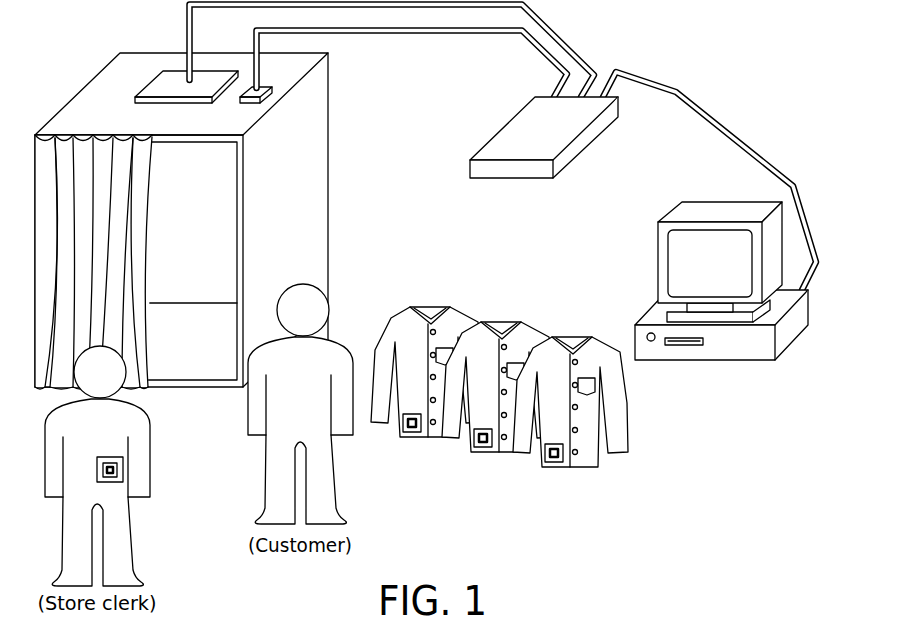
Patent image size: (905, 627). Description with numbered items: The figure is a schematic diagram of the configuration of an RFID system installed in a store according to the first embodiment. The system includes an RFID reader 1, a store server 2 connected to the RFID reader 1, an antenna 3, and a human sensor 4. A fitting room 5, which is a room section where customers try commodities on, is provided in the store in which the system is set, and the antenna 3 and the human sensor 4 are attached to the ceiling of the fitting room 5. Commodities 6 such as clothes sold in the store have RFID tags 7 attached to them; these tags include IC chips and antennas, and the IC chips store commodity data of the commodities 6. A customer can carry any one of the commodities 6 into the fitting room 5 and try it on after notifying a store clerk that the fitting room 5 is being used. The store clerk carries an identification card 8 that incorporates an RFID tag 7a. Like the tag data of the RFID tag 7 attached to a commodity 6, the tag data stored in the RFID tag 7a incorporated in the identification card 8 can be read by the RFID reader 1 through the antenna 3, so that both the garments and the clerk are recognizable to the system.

The RFID reader 1 is at (515, 179).
The store server 2 is at (690, 200).
The antenna 3 is at (167, 77).
The human sensor 4 is at (274, 88).
The fitting room 5 is at (322, 192).
The commodities 6 is at (463, 317).
The RFID tags 7 is at (411, 433).
The RFID tag 7a is at (112, 459).
The identification card 8 is at (124, 468).